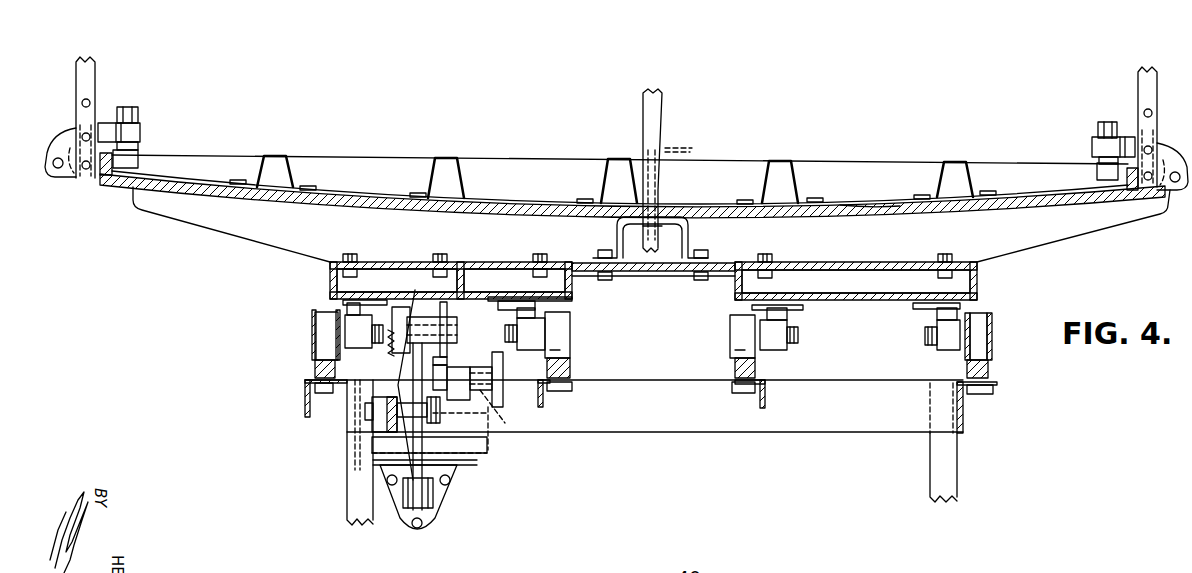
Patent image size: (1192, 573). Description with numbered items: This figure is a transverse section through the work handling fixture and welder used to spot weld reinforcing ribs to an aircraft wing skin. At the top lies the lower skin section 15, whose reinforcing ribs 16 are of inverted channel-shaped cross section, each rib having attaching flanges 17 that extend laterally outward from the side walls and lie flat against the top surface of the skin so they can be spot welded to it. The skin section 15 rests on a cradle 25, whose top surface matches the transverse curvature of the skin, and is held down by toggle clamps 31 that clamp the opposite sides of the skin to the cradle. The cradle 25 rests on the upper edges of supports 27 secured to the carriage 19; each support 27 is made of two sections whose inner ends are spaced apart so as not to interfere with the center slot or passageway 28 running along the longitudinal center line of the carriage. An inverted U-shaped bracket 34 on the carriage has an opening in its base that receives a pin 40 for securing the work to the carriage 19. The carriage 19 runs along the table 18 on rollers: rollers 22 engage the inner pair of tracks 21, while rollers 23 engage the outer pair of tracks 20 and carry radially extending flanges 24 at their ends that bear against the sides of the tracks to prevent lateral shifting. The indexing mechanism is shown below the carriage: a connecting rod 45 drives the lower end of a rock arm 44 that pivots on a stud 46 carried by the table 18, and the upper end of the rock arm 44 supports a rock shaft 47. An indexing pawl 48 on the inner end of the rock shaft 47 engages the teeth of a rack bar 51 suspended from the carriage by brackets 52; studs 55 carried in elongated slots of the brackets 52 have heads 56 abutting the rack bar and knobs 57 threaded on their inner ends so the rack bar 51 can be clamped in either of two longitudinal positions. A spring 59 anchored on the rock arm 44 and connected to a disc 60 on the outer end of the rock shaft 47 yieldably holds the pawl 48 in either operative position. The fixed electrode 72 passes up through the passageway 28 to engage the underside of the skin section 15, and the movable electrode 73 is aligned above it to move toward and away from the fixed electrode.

The skin section 15 is at (516, 190).
The reinforcing ribs 16 is at (282, 155).
The attaching flanges 17 is at (302, 186).
The table 18 is at (302, 411).
The carriage 19 is at (330, 266).
The outer tracks 20 is at (312, 367).
The inner tracks 21 is at (570, 367).
The rollers 22 is at (565, 337).
The rollers 23 is at (320, 331).
The flanges 24 is at (312, 311).
The cradle 25 is at (866, 208).
The supports 27 is at (245, 218).
The center slot or passageway 28 is at (693, 287).
The toggle clamps 31 is at (110, 134).
The inverted U-shaped bracket 34 is at (683, 248).
The pin 40 is at (672, 150).
The rock arm 44 is at (418, 368).
The connecting rod 45 is at (408, 506).
The stud 46 is at (440, 421).
The rock shaft 47 is at (421, 317).
The indexing pawl 48 is at (460, 301).
The rack bar 51 is at (447, 361).
The brackets 52 is at (448, 346).
The studs 55 is at (496, 416).
The heads 56 is at (437, 378).
The knob 57 is at (500, 366).
The spring 59 is at (390, 328).
The disc 60 is at (413, 300).
The fixed electrode 72 is at (645, 230).
The movable electrode 73 is at (652, 144).